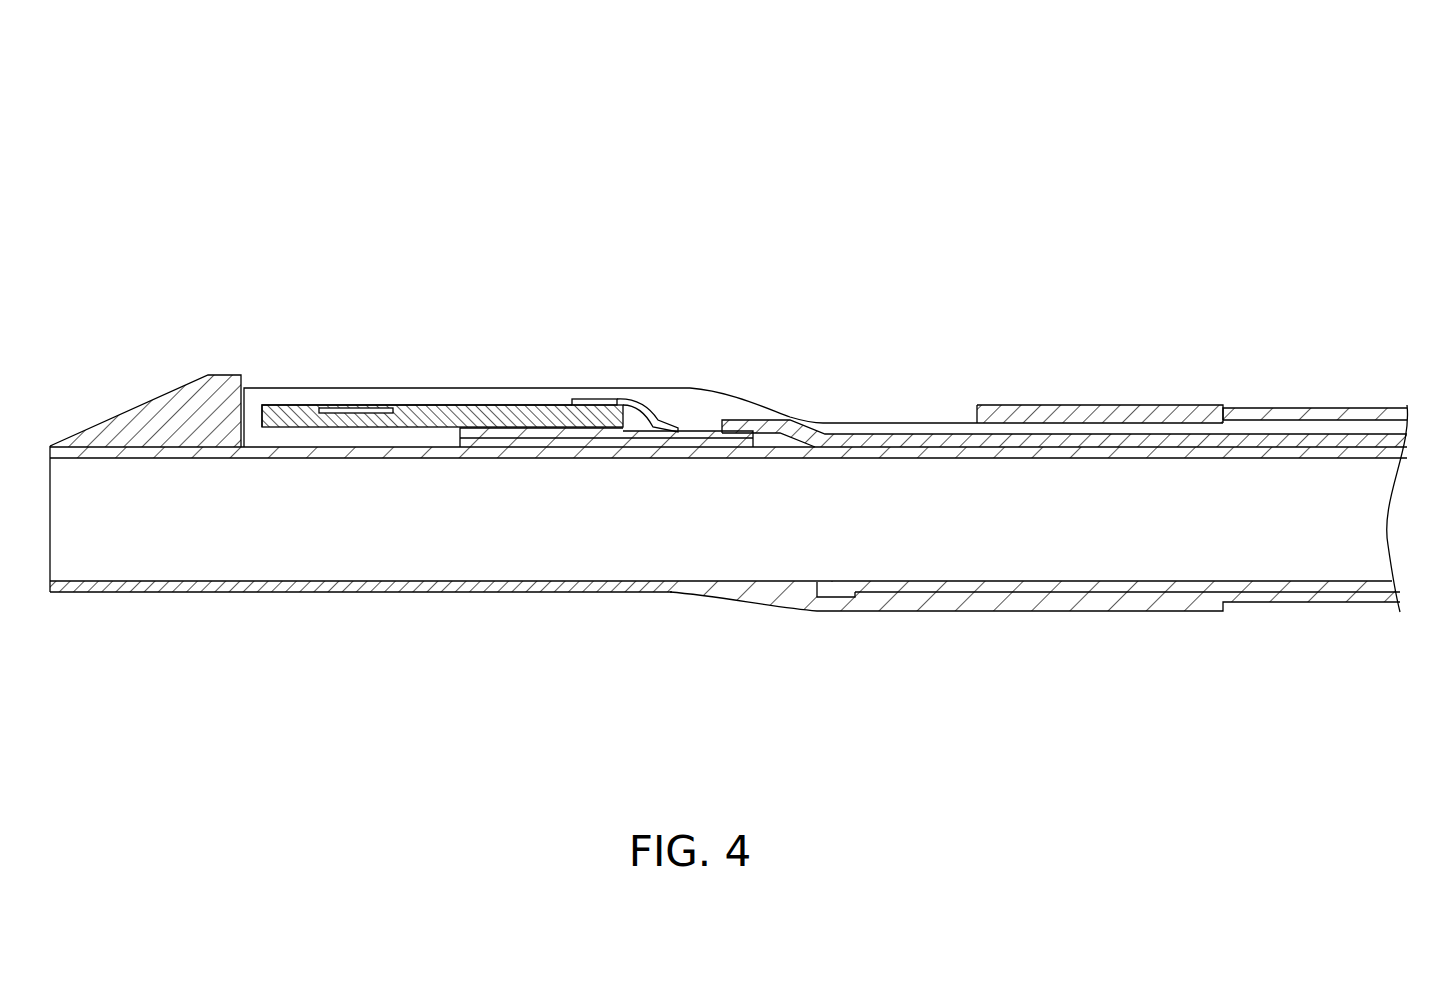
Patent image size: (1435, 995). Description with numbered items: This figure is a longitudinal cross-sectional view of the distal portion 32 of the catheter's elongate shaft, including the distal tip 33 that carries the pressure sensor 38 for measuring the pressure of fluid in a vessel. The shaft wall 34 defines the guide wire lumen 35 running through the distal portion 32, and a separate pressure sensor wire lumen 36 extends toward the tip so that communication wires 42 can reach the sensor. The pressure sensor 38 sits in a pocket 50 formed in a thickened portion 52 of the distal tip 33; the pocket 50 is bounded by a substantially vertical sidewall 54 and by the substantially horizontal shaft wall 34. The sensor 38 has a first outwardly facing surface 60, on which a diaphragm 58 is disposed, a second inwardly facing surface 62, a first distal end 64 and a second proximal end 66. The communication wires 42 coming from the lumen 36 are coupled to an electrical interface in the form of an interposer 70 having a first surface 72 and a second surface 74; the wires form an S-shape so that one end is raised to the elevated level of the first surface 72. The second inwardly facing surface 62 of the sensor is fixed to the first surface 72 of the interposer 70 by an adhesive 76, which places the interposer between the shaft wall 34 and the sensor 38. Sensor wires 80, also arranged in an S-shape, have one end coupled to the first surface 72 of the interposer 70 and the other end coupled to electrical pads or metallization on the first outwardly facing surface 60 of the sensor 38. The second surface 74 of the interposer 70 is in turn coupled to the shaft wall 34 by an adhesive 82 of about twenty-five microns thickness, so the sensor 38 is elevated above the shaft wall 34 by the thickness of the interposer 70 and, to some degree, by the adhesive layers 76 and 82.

The distal portion 32 is at (978, 733).
The distal tip 33 is at (344, 196).
The shaft wall 34 is at (362, 458).
The guide wire lumen 35 is at (883, 537).
The pressure sensor wire lumen 36 is at (1373, 409).
The pressure sensor 38 is at (463, 411).
The communication wires 42 is at (823, 427).
The pocket 50 is at (443, 388).
The thickened portion 52 is at (733, 407).
The sidewall 54 is at (243, 388).
The diaphragm 58 is at (353, 405).
The first outwardly facing surface 60 is at (487, 405).
The second inwardly facing surface 62 is at (292, 428).
The first distal end 64 is at (595, 404).
The second proximal end 66 is at (295, 409).
The interposer 70 is at (695, 447).
The first surface 72 is at (722, 428).
The second surface 74 is at (732, 450).
The adhesive 76 is at (485, 450).
The sensor wires 80 is at (627, 400).
The adhesive 82 is at (533, 450).